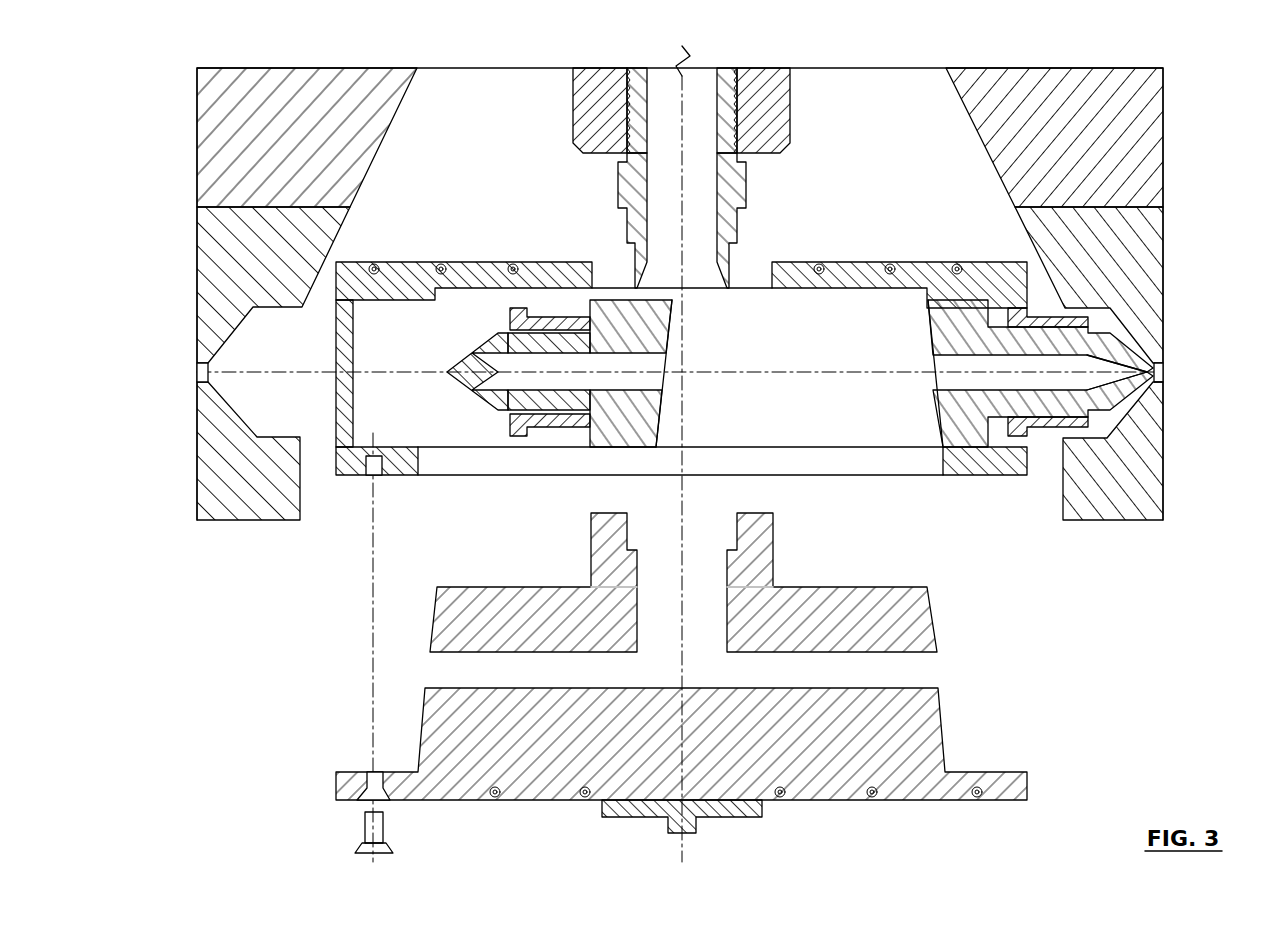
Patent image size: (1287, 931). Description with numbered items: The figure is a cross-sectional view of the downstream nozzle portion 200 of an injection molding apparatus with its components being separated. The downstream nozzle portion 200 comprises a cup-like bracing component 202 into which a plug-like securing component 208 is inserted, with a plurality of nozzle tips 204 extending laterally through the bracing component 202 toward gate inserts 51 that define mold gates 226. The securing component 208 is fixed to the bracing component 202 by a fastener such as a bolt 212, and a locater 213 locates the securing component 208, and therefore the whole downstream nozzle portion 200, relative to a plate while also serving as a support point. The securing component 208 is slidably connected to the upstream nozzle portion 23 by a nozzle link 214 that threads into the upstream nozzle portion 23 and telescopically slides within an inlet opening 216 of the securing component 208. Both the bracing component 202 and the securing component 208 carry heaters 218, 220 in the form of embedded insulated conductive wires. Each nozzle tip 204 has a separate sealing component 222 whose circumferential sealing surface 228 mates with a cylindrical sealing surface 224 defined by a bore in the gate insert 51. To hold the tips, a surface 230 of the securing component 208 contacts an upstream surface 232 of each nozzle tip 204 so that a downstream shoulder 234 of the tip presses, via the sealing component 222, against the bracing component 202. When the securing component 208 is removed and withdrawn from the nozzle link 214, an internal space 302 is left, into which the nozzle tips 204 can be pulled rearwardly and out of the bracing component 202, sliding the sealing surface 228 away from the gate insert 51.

The downstream nozzle portion 200 is at (1203, 156).
The upstream nozzle portion 23 is at (585, 92).
The nozzle link 214 is at (628, 185).
The circumferential sealing surface 228 is at (525, 306).
The bracing component 202 is at (833, 275).
The heater 218 is at (893, 265).
The gate insert 51 is at (222, 268).
The mold gate 226 is at (200, 367).
The sealing surface 224 is at (265, 430).
The nozzle tip 204 is at (540, 398).
The internal space 302 is at (748, 390).
The downstream shoulder 234 is at (1105, 378).
The upstream surface 232 is at (930, 425).
The sealing component 222 is at (550, 434).
The inlet opening 216 is at (700, 543).
The surface 230 is at (932, 617).
The bolt 212 is at (352, 830).
The heater 220 is at (497, 797).
The locater 213 is at (742, 812).
The securing component 208 is at (830, 775).